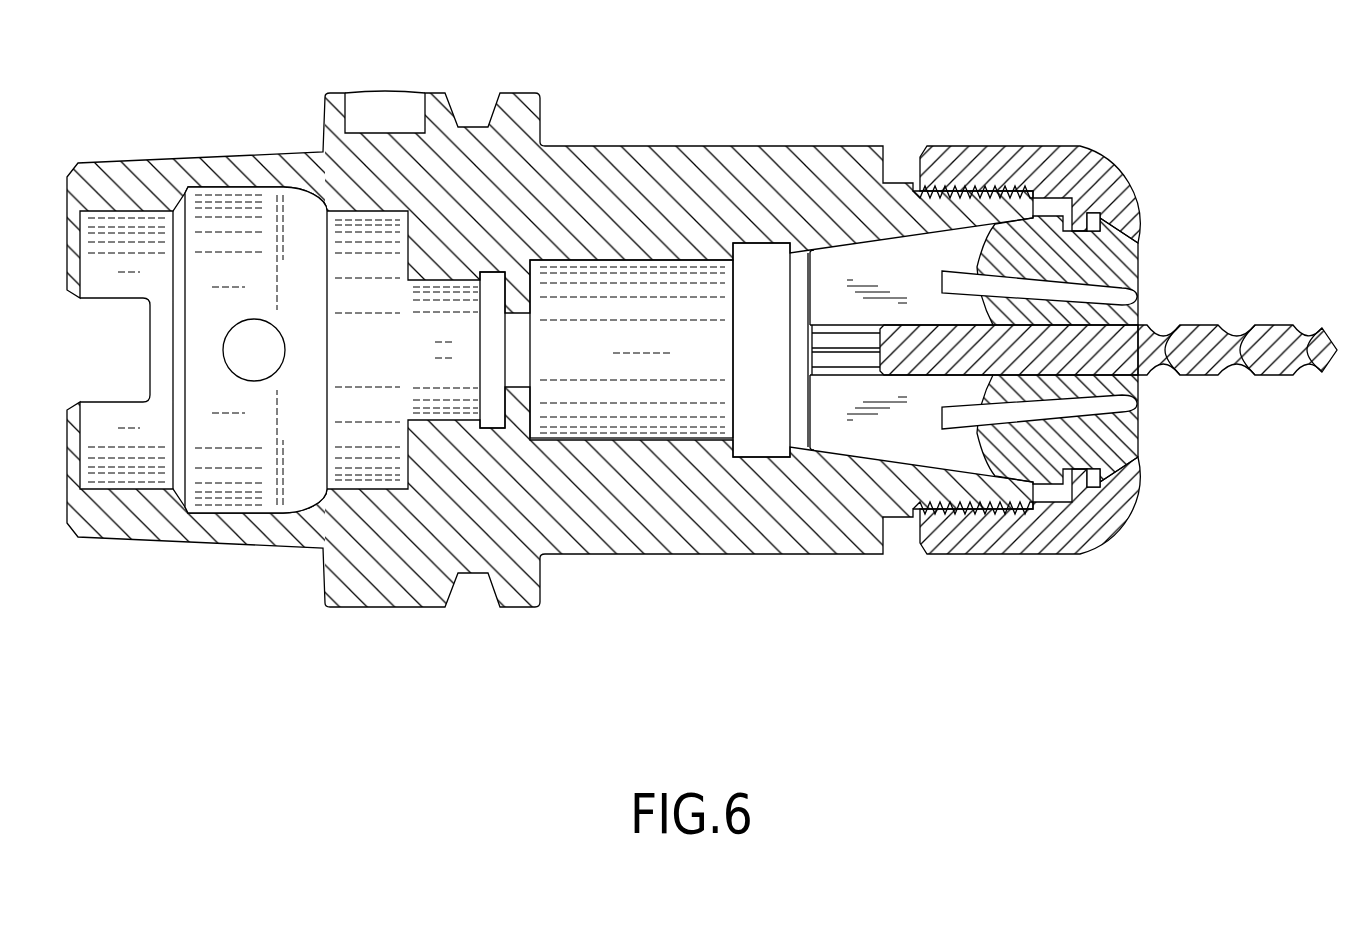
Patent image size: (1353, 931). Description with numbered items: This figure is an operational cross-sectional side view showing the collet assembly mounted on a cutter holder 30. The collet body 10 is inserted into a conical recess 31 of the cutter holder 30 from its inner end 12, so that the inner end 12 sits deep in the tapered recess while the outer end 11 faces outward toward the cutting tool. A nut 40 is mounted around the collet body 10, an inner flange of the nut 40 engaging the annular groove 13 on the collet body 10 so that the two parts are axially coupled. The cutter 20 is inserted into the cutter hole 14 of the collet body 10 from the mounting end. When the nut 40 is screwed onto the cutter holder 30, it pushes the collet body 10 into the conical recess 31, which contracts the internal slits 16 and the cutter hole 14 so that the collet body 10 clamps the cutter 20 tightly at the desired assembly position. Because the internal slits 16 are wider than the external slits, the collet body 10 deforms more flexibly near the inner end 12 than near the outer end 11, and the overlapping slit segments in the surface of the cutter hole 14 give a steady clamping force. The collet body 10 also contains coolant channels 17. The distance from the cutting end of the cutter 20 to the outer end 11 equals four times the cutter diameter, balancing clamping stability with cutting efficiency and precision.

The cutter holder 30 is at (700, 98).
The conical recess 31 is at (893, 242).
The annular groove 13 is at (1090, 213).
The nut 40 is at (1153, 176).
The collet body 10 is at (1122, 265).
The coolant channels 17 is at (1139, 293).
The cutter 20 is at (1256, 395).
The outer end 11 is at (1139, 433).
The inner end 12 is at (812, 285).
The cutter hole 14 is at (812, 355).
The internal slits 16 is at (857, 423).